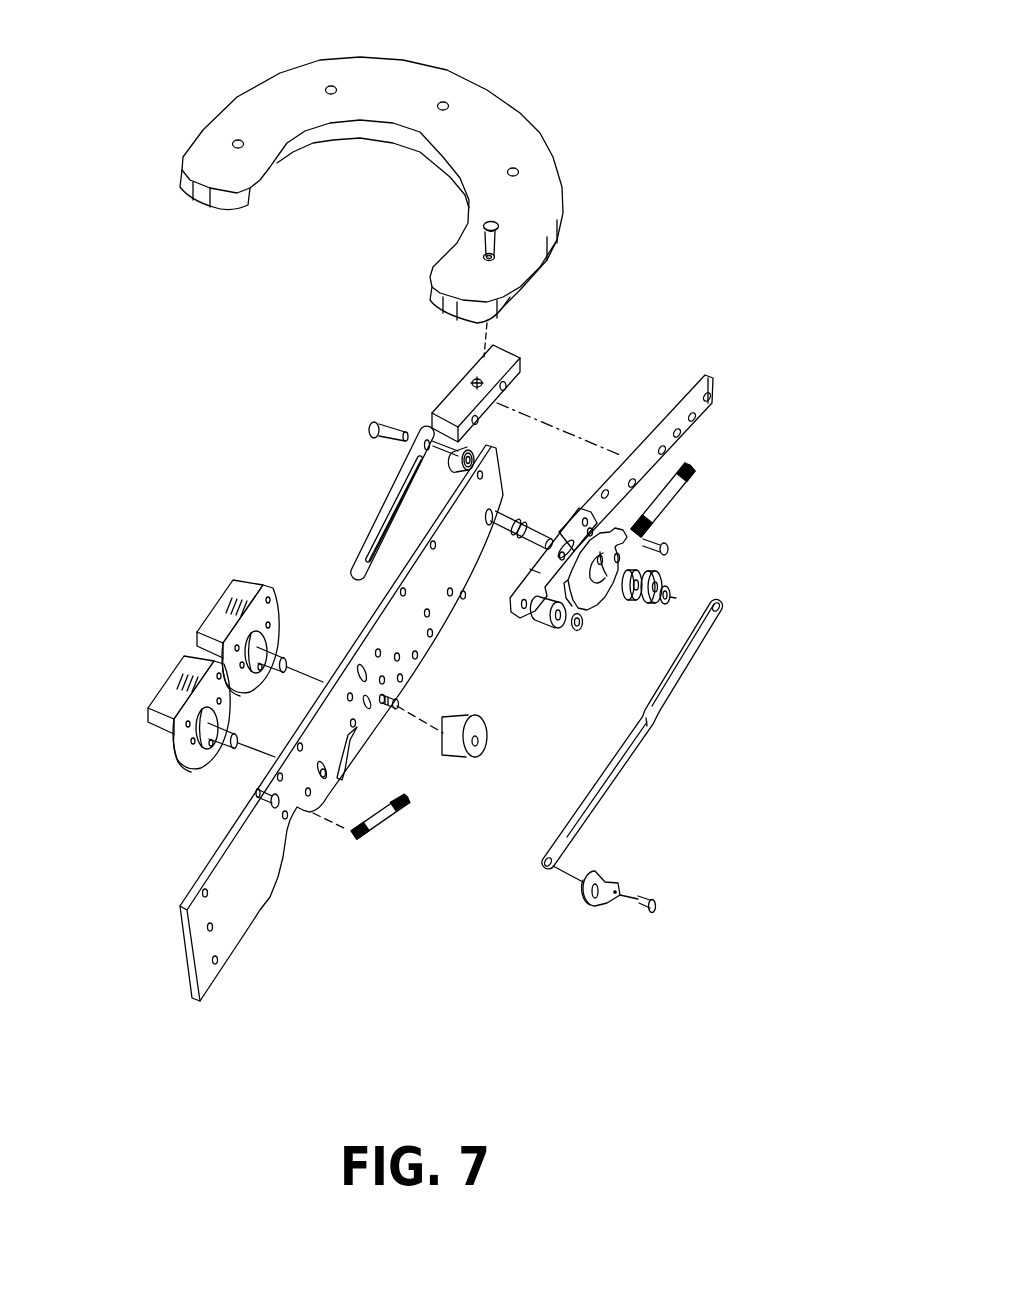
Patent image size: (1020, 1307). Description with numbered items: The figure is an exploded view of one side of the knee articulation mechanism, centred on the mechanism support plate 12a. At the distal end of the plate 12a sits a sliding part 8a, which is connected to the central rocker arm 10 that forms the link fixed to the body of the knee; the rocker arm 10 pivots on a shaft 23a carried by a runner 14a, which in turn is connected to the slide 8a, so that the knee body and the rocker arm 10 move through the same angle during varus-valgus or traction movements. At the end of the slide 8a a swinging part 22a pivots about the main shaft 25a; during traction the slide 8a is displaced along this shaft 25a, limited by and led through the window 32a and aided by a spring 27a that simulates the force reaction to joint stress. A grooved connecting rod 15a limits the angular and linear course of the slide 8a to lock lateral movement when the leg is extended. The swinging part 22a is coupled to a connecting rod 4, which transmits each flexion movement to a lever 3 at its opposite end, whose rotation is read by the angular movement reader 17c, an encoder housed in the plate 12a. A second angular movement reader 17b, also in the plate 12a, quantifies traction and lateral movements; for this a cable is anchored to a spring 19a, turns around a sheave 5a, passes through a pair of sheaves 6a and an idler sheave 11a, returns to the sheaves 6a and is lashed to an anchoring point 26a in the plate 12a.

The rocker arm 10 is at (490, 89).
The shaft 23a is at (500, 226).
The runner 14a is at (508, 350).
The grooved connecting rod 15a is at (380, 510).
The main shaft 25a is at (537, 530).
The window 32a is at (605, 492).
The sliding part 8a is at (715, 395).
The spring 27a is at (693, 468).
The pair of sheaves 6a is at (660, 578).
The connecting rod 4 is at (718, 600).
The swinging part 22a is at (593, 602).
The idler sheave 11a is at (548, 623).
The sheave 5a is at (463, 770).
The spring 19a is at (353, 837).
The lever 3 is at (602, 907).
The mechanism support plate 12a is at (183, 948).
The pin 26a is at (390, 697).
The angular movement reader 17b is at (228, 607).
The angular movement reader 17c is at (172, 733).